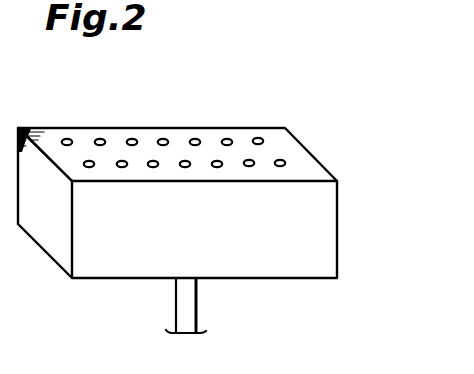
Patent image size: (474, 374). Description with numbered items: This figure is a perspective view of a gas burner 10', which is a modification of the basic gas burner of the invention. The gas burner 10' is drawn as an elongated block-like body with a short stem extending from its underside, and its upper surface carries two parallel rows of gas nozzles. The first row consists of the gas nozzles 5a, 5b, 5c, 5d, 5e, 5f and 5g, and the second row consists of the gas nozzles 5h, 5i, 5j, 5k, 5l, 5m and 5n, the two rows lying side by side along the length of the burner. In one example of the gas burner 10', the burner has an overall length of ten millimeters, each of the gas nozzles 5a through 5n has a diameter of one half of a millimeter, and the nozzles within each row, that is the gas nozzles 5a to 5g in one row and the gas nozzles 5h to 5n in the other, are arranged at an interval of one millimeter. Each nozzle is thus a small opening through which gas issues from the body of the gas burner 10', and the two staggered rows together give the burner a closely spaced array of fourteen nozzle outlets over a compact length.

The gas nozzle 5a is at (67, 139).
The gas nozzle 5b is at (101, 139).
The gas nozzle 5c is at (132, 139).
The gas nozzle 5d is at (163, 139).
The gas nozzle 5e is at (195, 139).
The gas nozzle 5f is at (228, 139).
The gas nozzle 5g is at (260, 138).
The gas nozzle 5h is at (89, 167).
The gas nozzle 5i is at (122, 167).
The gas nozzle 5j is at (153, 167).
The gas nozzle 5k is at (185, 167).
The gas nozzle 5l is at (218, 167).
The gas nozzle 5m is at (250, 166).
The gas nozzle 5n is at (285, 163).
The gas burner 10' is at (177, 239).